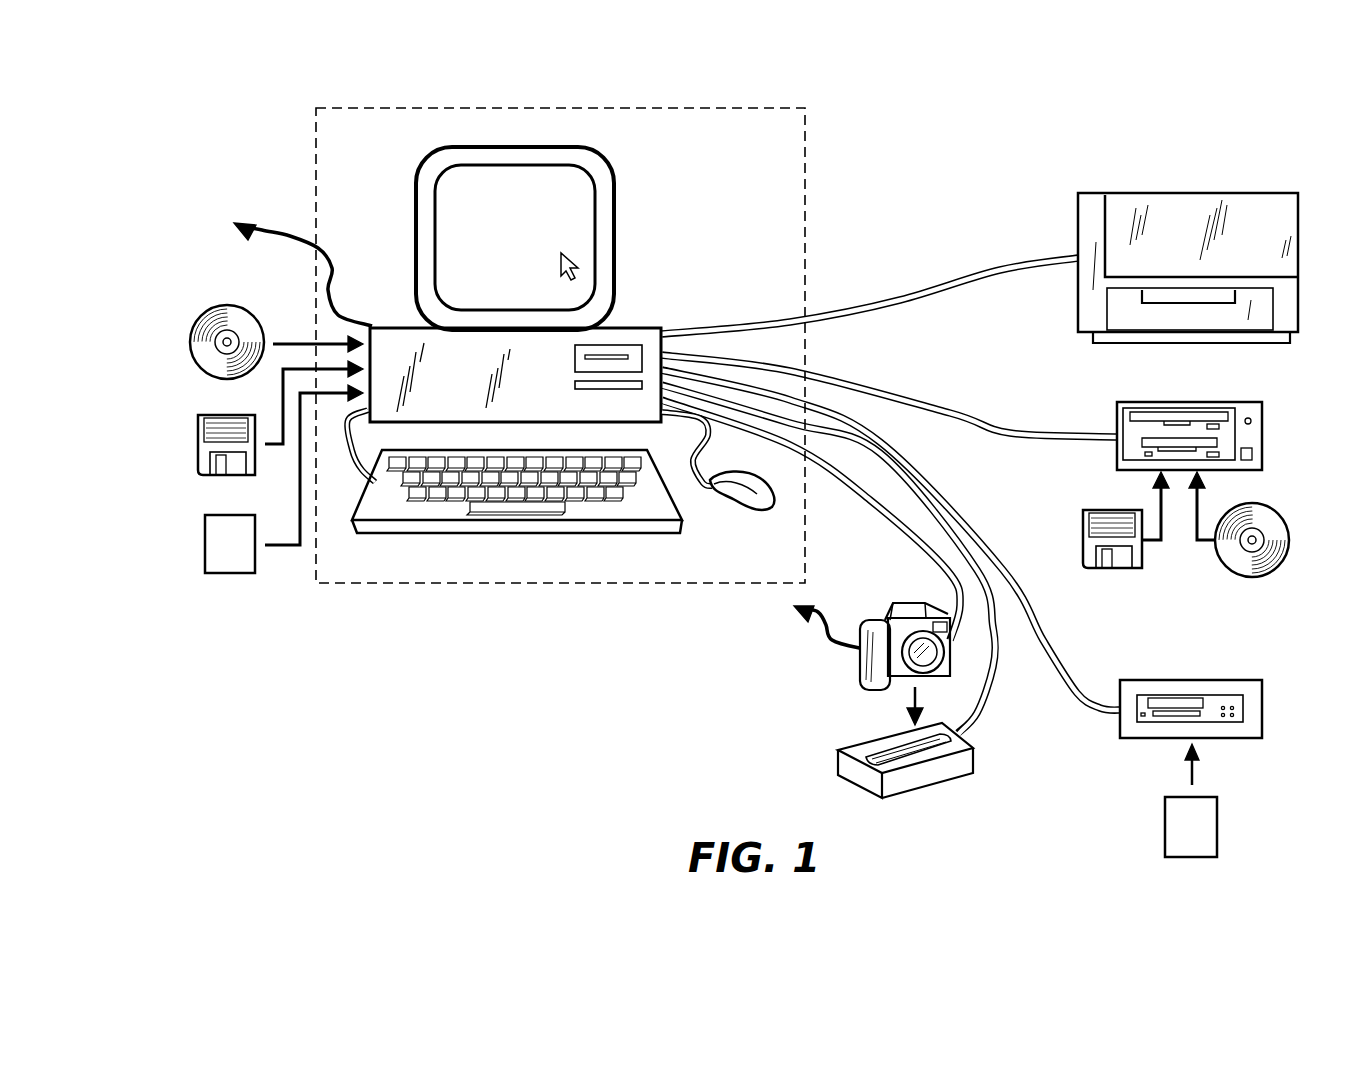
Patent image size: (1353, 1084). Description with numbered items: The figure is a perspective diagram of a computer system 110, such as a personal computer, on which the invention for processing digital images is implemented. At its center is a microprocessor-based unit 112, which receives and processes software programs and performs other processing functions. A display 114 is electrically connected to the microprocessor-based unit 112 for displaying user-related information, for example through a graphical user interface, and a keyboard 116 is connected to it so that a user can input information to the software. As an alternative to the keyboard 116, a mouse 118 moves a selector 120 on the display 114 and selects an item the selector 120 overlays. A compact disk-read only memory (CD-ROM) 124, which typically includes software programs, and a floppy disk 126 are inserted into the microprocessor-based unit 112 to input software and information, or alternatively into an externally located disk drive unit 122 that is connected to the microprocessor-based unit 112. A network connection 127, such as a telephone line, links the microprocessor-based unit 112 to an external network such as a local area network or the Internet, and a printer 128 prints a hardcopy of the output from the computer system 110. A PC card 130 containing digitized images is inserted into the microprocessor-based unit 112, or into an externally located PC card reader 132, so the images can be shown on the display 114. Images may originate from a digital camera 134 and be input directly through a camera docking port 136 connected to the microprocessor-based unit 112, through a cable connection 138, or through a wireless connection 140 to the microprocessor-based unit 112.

The computer system 110 is at (302, 156).
The microprocessor-based unit 112 is at (402, 326).
The display 114 is at (426, 153).
The keyboard 116 is at (442, 536).
The mouse 118 is at (727, 503).
The selector 120 is at (581, 262).
The disk drive unit 122 is at (1262, 430).
The compact disk-read only memory (CD-ROM) 124 is at (185, 349).
The floppy disk 126 is at (195, 452).
The network connection 127 is at (283, 250).
The printer 128 is at (1173, 193).
The PC card 130 is at (203, 550).
The PC card reader 132 is at (1262, 705).
The digital camera 134 is at (906, 600).
The camera docking port 136 is at (836, 765).
The cable connection 138 is at (891, 515).
The wireless connection 140 is at (825, 650).